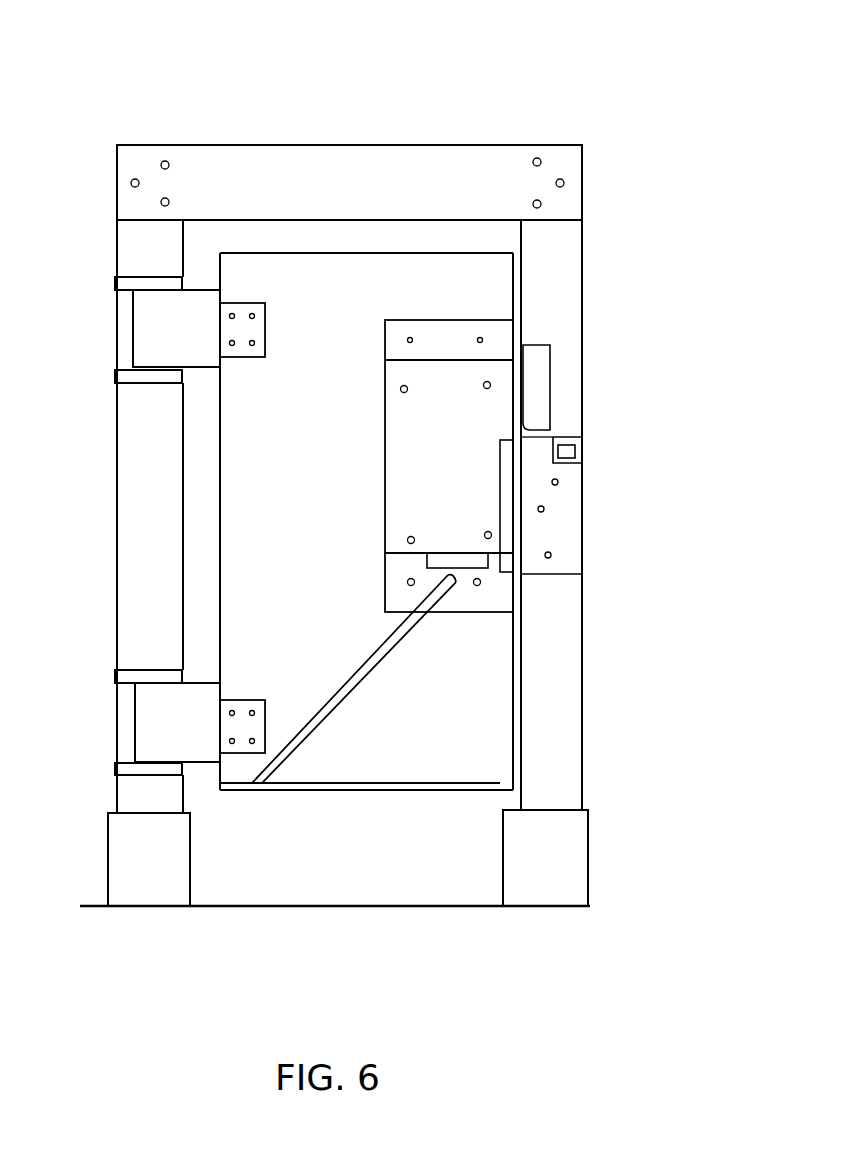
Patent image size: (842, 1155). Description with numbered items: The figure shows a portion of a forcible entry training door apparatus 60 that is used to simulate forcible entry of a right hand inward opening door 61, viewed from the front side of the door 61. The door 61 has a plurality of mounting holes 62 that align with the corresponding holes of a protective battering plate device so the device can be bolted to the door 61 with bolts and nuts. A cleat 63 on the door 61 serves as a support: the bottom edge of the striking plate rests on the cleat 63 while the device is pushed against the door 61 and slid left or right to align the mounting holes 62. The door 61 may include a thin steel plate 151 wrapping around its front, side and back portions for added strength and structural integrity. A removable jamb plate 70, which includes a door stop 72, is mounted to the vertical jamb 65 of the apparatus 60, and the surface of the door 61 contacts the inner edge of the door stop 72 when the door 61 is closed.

The forcible entry training door apparatus 60 is at (683, 118).
The right hand inward opening door 61 is at (500, 283).
The mounting holes 62 is at (406, 393).
The cleat 63 is at (477, 568).
The vertical jamb 65 is at (570, 348).
The removable jamb plate 70 is at (562, 498).
The door stop 72 is at (508, 517).
The thin steel plate 151 is at (493, 403).